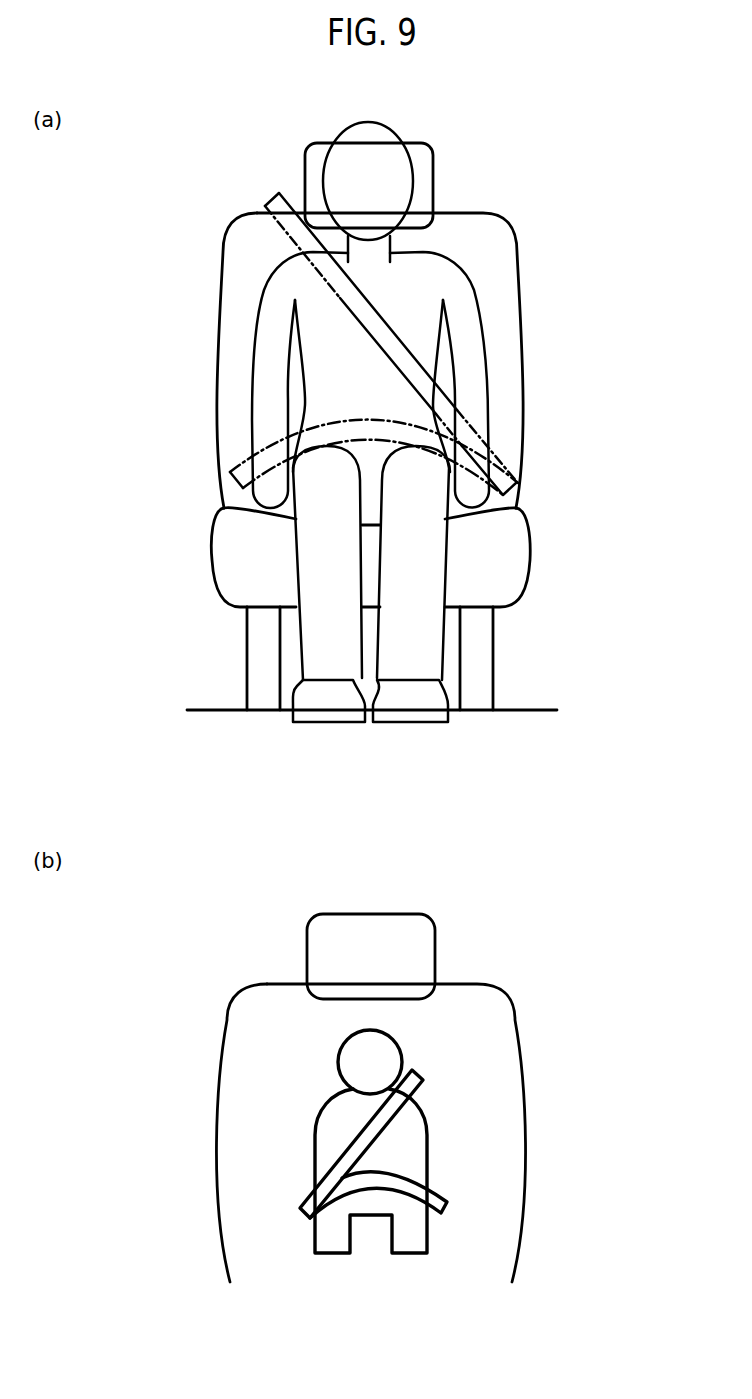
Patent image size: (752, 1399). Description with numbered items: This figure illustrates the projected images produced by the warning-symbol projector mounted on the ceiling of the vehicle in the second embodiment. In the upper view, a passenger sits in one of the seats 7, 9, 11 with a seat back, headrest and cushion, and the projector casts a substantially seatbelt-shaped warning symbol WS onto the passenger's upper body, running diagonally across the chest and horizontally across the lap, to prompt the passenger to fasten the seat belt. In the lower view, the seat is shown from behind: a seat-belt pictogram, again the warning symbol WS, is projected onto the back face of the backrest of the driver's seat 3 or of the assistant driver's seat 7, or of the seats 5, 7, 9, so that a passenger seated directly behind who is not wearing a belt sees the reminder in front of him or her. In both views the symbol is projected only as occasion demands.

The assistant driver's seat 7 is at (402, 426).
The seat 9 is at (402, 426).
The seat 11 is at (512, 245).
The driver's seat 3 is at (421, 1098).
The vehicle seat 5 is at (510, 1018).